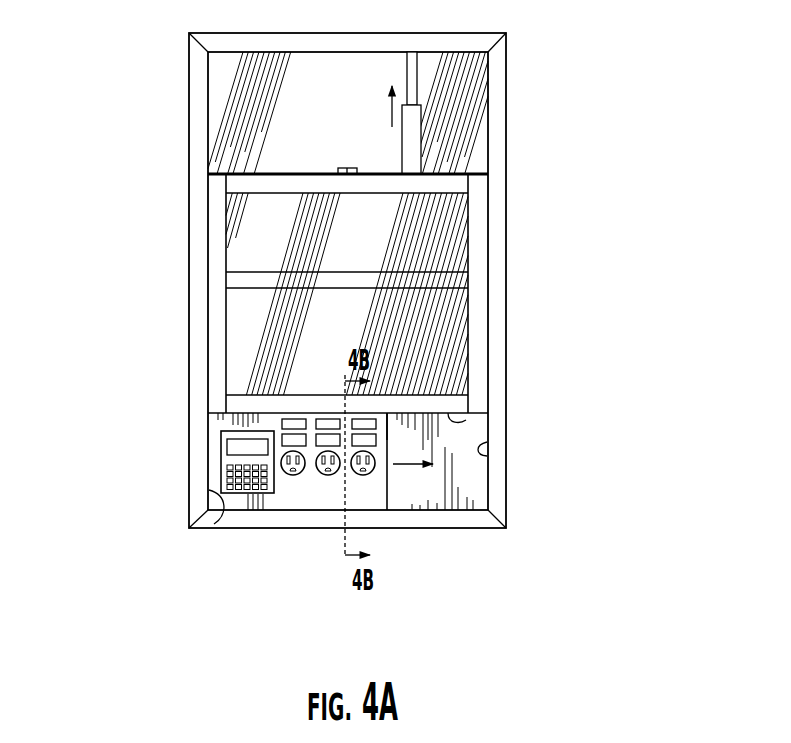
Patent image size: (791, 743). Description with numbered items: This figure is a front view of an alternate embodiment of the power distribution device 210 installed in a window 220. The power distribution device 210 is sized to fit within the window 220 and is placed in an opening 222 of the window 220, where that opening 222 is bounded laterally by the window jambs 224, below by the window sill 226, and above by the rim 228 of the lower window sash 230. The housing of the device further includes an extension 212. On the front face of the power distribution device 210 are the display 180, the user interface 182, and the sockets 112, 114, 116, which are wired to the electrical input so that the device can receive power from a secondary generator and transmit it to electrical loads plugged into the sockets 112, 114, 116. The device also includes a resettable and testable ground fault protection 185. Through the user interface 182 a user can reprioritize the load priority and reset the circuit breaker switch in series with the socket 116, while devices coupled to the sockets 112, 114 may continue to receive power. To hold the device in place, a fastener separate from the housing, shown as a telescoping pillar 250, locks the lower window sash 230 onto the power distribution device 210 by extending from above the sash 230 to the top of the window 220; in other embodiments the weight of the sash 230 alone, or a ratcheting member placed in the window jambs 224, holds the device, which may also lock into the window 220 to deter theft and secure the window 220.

The window 220 is at (540, 258).
The power distribution device 210 is at (174, 474).
The telescoping pillar 250 is at (413, 128).
The lower window sash 230 is at (247, 300).
The rim 228 is at (258, 403).
The window sill 226 is at (318, 495).
The display 180 is at (227, 443).
The user interface 182 is at (225, 468).
The socket 112 is at (293, 476).
The socket 114 is at (333, 476).
The socket 116 is at (370, 473).
The extension 212 is at (467, 480).
The ground fault protection 185 is at (385, 432).
The opening 222 is at (466, 420).
The window jambs 224 is at (214, 524).